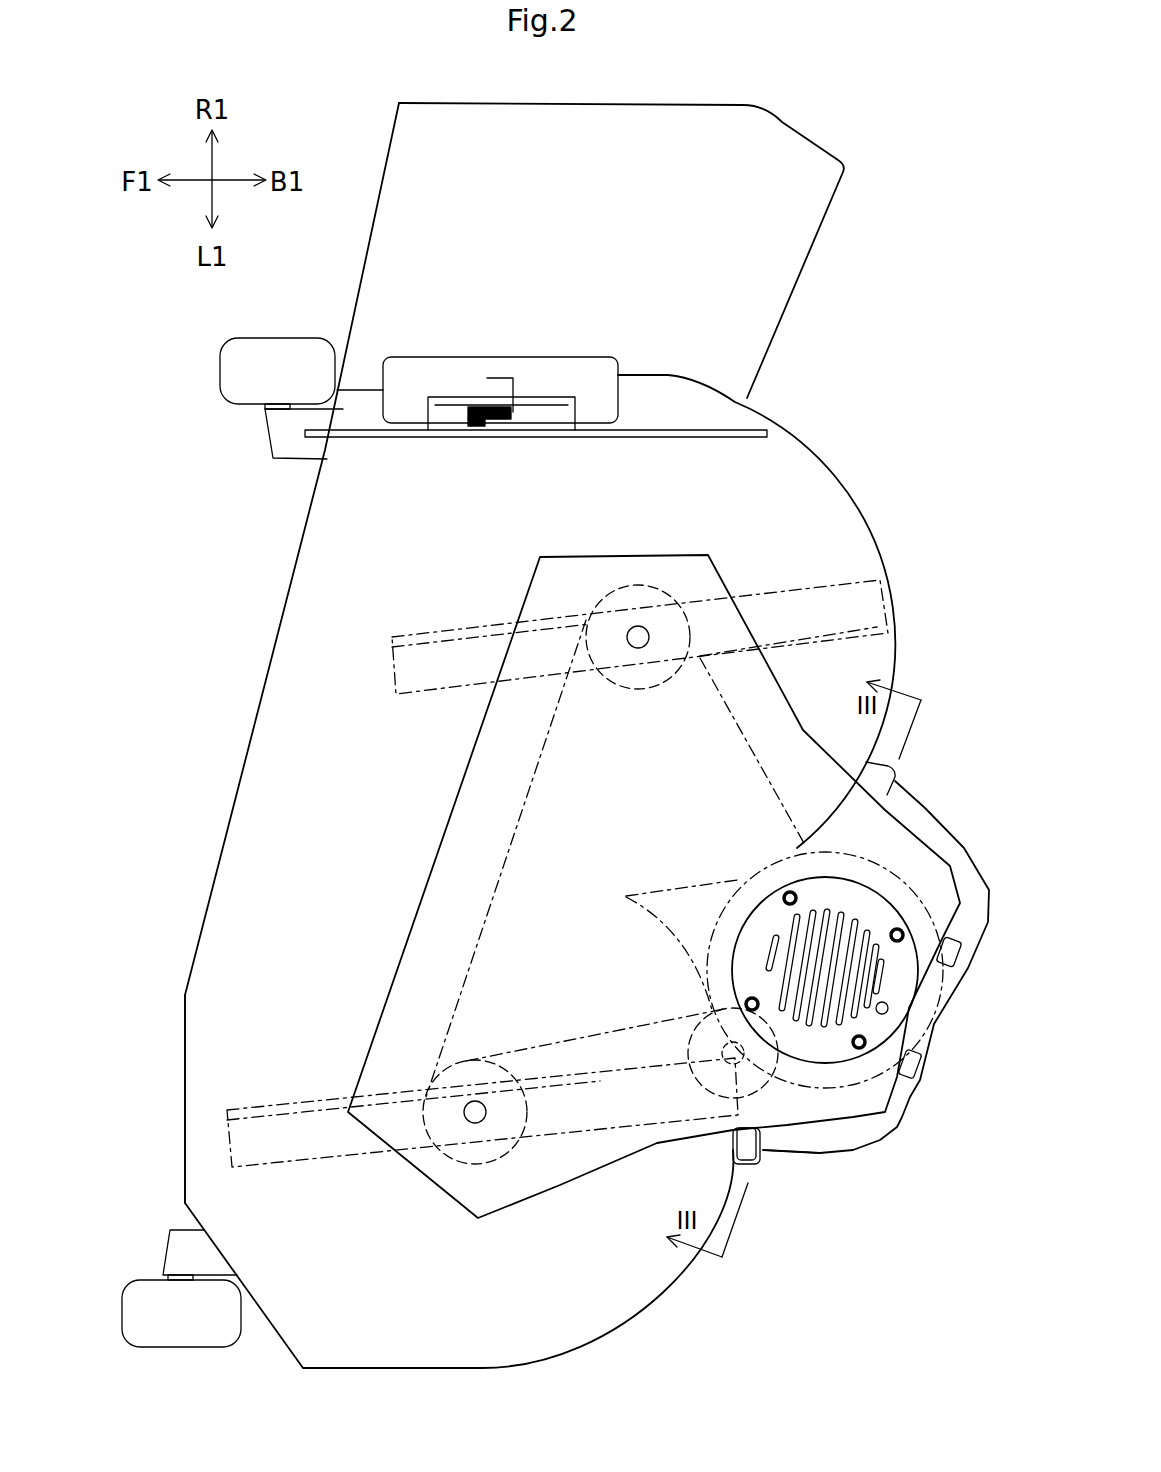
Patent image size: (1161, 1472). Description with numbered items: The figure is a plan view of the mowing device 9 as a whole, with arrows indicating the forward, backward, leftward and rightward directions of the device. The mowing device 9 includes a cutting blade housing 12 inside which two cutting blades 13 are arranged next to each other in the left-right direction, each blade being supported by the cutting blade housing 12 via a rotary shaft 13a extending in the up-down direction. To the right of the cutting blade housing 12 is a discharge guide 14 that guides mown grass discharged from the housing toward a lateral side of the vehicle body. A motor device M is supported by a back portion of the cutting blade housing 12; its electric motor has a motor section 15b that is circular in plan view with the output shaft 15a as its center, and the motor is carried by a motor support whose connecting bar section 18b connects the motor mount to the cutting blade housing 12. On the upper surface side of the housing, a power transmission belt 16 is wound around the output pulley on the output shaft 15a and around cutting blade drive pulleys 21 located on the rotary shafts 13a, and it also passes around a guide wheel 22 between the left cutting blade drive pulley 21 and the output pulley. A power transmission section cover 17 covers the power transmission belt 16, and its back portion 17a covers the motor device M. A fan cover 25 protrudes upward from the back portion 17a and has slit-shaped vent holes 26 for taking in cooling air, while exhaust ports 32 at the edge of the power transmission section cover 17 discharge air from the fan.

The mowing device 9 is at (847, 400).
The cutting blade housing 12 is at (316, 805).
The cutting blades 13 is at (446, 633).
The rotary shaft 13a is at (638, 626).
The discharge guide 14 is at (398, 260).
The output shaft 15a is at (769, 974).
The motor section 15b is at (934, 998).
The power transmission belt 16 is at (508, 845).
The power transmission section cover 17 is at (457, 894).
The back portion 17a is at (900, 867).
The connecting bar section 18b is at (900, 1124).
The cutting blade drive pulleys 21 is at (641, 692).
The guide wheel 22 is at (760, 1087).
The fan cover 25 is at (825, 1063).
The vent holes 26 is at (771, 951).
The exhaust ports 32 is at (589, 552).
The motor device M is at (828, 1172).